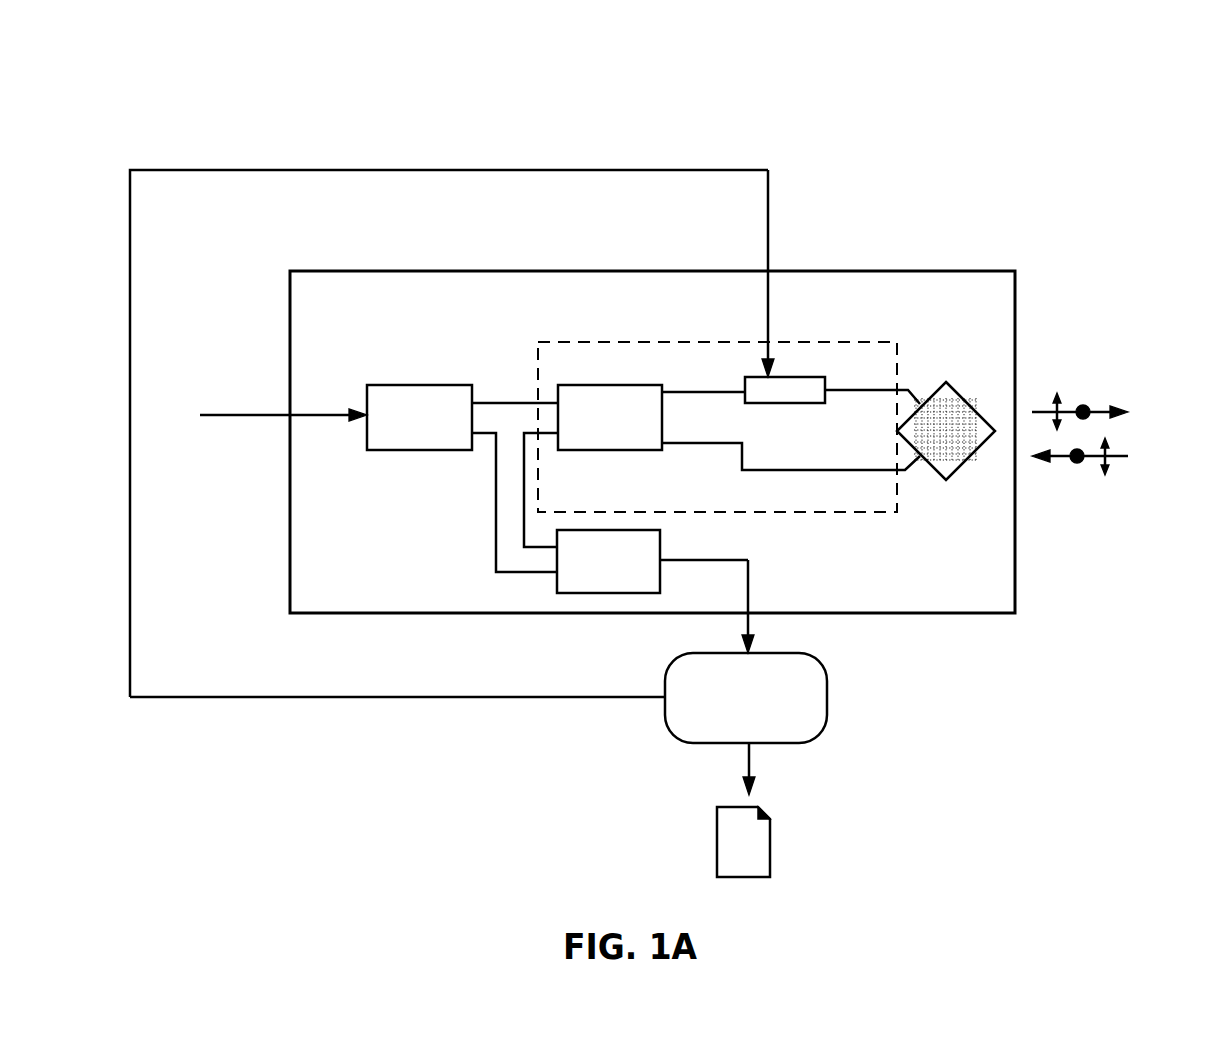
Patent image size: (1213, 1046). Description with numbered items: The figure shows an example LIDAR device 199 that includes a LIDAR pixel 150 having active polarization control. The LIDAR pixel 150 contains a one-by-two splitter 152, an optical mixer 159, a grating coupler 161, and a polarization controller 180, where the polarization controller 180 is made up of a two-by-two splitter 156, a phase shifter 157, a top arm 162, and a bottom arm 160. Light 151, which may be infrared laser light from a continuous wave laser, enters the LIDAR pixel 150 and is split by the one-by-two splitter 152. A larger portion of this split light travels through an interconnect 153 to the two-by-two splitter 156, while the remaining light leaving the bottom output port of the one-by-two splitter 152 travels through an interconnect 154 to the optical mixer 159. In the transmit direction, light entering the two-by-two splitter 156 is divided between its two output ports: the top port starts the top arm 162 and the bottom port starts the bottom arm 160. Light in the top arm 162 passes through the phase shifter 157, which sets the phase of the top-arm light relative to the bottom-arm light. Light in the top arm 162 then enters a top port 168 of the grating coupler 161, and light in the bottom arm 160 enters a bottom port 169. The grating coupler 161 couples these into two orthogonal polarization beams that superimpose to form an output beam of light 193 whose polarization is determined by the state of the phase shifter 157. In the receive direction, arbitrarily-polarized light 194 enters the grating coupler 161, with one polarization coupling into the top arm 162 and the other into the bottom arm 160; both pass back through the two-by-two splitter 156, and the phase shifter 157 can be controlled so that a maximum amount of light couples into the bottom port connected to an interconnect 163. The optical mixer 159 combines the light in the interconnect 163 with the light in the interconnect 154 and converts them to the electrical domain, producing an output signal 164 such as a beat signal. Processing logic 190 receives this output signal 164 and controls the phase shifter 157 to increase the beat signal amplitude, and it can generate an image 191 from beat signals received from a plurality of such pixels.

The LIDAR device 199 is at (670, 369).
The LIDAR pixel 150 is at (652, 442).
The light 151 is at (248, 415).
The 1×2 splitter 152 is at (412, 385).
The interconnect 153 is at (515, 397).
The interconnect 154 is at (496, 505).
The 2×2 splitter 156 is at (597, 385).
The phase shifter 157 is at (790, 403).
The optical mixer 159 is at (608, 561).
The bottom arm 160 is at (856, 494).
The grating coupler 161 is at (946, 382).
The top arm 162 is at (874, 361).
The interconnect 163 is at (524, 548).
The output signal 164 is at (748, 578).
The top port 168 is at (920, 379).
The bottom port 169 is at (922, 487).
The polarization controller 180 is at (552, 342).
The processing logic 190 is at (746, 724).
The image 191 is at (743, 842).
The output beam of light 193 is at (1098, 398).
The arbitrarily-polarized light 194 is at (1118, 472).